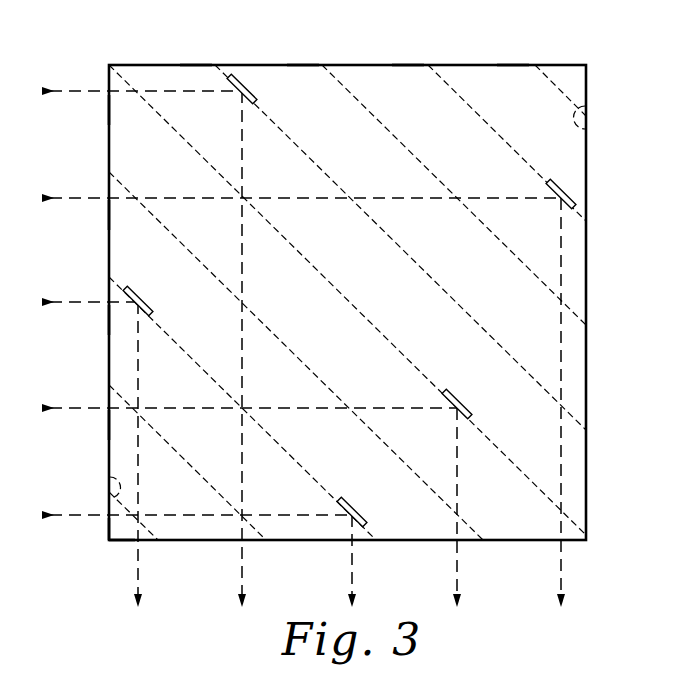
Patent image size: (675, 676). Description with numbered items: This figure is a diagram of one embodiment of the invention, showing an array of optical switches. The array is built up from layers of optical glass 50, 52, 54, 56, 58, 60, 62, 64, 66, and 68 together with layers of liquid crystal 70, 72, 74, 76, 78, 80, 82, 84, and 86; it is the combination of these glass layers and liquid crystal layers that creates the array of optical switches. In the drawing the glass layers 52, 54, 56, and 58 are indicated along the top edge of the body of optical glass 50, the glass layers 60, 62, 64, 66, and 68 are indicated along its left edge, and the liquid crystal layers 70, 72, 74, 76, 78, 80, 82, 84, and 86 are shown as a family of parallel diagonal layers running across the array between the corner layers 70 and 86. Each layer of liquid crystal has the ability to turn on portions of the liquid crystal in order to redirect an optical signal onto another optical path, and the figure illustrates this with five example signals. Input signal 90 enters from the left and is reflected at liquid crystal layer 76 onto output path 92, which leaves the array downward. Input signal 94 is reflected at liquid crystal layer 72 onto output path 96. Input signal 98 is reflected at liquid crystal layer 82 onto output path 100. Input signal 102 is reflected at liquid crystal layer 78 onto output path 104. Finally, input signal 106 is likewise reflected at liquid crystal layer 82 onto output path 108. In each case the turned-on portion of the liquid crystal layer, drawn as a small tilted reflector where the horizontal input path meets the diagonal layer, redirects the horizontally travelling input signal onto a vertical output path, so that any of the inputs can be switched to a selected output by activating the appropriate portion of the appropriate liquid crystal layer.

The layer of optical glass 50 is at (582, 72).
The layer of optical glass 52 is at (510, 69).
The layer of optical glass 54 is at (405, 69).
The layer of optical glass 56 is at (300, 69).
The layer of optical glass 58 is at (193, 69).
The layer of optical glass 60 is at (110, 108).
The layer of optical glass 62 is at (110, 212).
The layer of optical glass 64 is at (110, 317).
The layer of optical glass 66 is at (110, 422).
The layer of optical glass 68 is at (125, 543).
The layer of liquid crystal 70 is at (597, 125).
The layer of liquid crystal 72 is at (512, 152).
The layer of liquid crystal 74 is at (406, 152).
The layer of liquid crystal 76 is at (300, 152).
The layer of liquid crystal 78 is at (194, 152).
The layer of liquid crystal 80 is at (194, 259).
The layer of liquid crystal 82 is at (194, 364).
The layer of liquid crystal 84 is at (194, 469).
The layer of liquid crystal 86 is at (100, 485).
The input signal 90 is at (60, 90).
The output path 92 is at (246, 570).
The input signal 94 is at (78, 197).
The output path 96 is at (565, 570).
The input signal 98 is at (78, 301).
The output path 100 is at (142, 570).
The input signal 102 is at (78, 407).
The output path 104 is at (461, 570).
The input signal 106 is at (83, 518).
The output path 108 is at (356, 572).